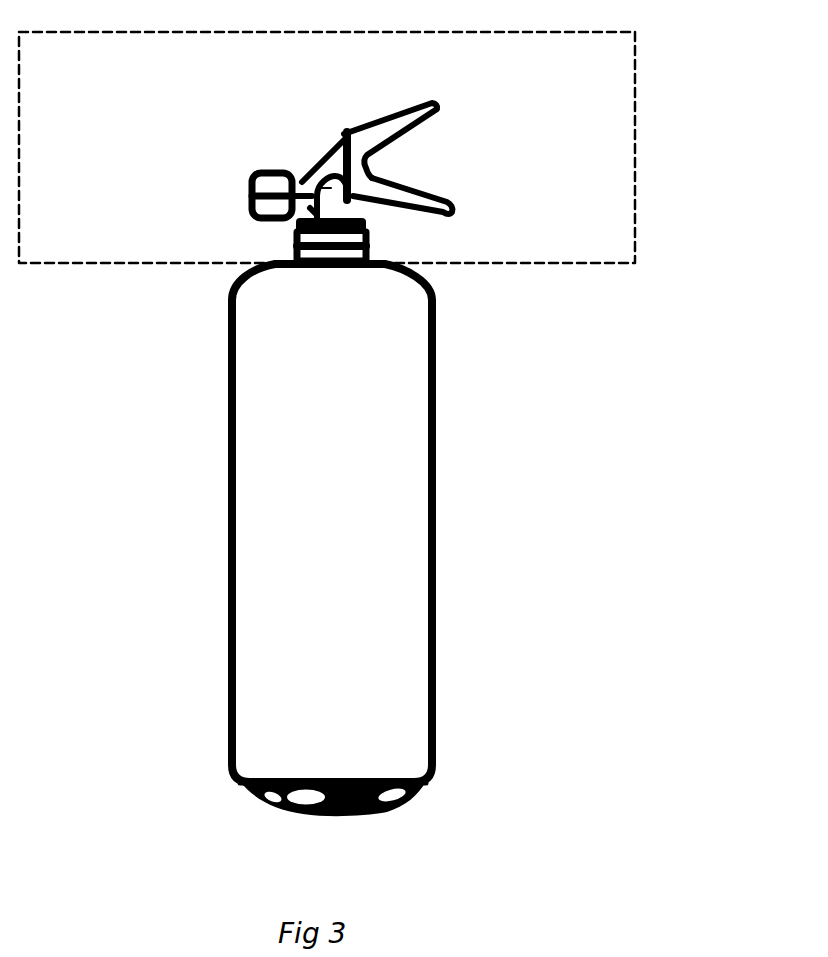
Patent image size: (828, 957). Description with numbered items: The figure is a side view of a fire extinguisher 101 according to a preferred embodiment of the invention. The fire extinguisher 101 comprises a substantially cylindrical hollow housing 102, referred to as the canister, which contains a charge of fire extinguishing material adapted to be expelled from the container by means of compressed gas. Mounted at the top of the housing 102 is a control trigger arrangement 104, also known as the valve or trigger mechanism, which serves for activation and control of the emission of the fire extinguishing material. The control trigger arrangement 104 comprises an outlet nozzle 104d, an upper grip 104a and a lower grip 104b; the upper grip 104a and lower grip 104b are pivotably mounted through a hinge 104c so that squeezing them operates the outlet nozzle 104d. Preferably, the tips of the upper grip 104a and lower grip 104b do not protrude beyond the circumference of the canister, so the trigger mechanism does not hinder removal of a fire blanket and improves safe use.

The fire extinguisher 101 is at (494, 439).
The cylindrical hollow housing 102 is at (225, 323).
The control trigger arrangement 104 is at (638, 147).
The upper grip 104a is at (442, 108).
The lower grip 104b is at (460, 212).
The hinge 104c is at (306, 188).
The outlet nozzle 104d is at (245, 184).